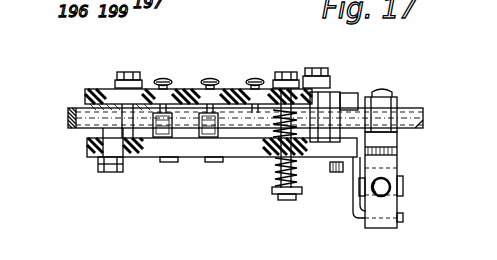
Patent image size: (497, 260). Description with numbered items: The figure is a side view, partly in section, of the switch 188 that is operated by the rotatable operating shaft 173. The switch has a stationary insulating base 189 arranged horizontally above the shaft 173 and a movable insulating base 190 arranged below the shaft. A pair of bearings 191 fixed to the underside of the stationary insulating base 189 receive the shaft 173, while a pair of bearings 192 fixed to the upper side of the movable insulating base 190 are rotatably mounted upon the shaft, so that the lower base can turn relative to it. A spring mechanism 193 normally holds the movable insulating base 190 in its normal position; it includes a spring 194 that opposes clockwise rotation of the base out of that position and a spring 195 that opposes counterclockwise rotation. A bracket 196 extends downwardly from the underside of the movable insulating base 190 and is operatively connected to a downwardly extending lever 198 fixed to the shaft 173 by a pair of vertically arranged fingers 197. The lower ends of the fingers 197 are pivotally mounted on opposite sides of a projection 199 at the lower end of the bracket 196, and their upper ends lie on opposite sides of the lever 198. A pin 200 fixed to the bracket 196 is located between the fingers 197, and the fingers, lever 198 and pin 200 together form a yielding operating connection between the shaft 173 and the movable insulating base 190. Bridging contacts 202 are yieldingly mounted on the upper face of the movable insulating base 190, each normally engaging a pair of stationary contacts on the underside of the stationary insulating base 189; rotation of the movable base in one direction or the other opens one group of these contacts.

The operating shaft 173 is at (68, 118).
The switch 188 is at (195, 80).
The stationary insulating base 189 is at (85, 97).
The movable insulating base 190 is at (87, 150).
The bearings 191 is at (109, 88).
The bearings 192 is at (87, 138).
The spring mechanism 193 is at (292, 200).
The spring 194 is at (262, 138).
The spring 195 is at (273, 177).
The bracket 196 is at (355, 166).
The fingers 197 is at (385, 228).
The lever 198 is at (397, 150).
The projection 199 is at (403, 218).
The pin 200 is at (403, 186).
The bridging contacts 202 is at (187, 132).